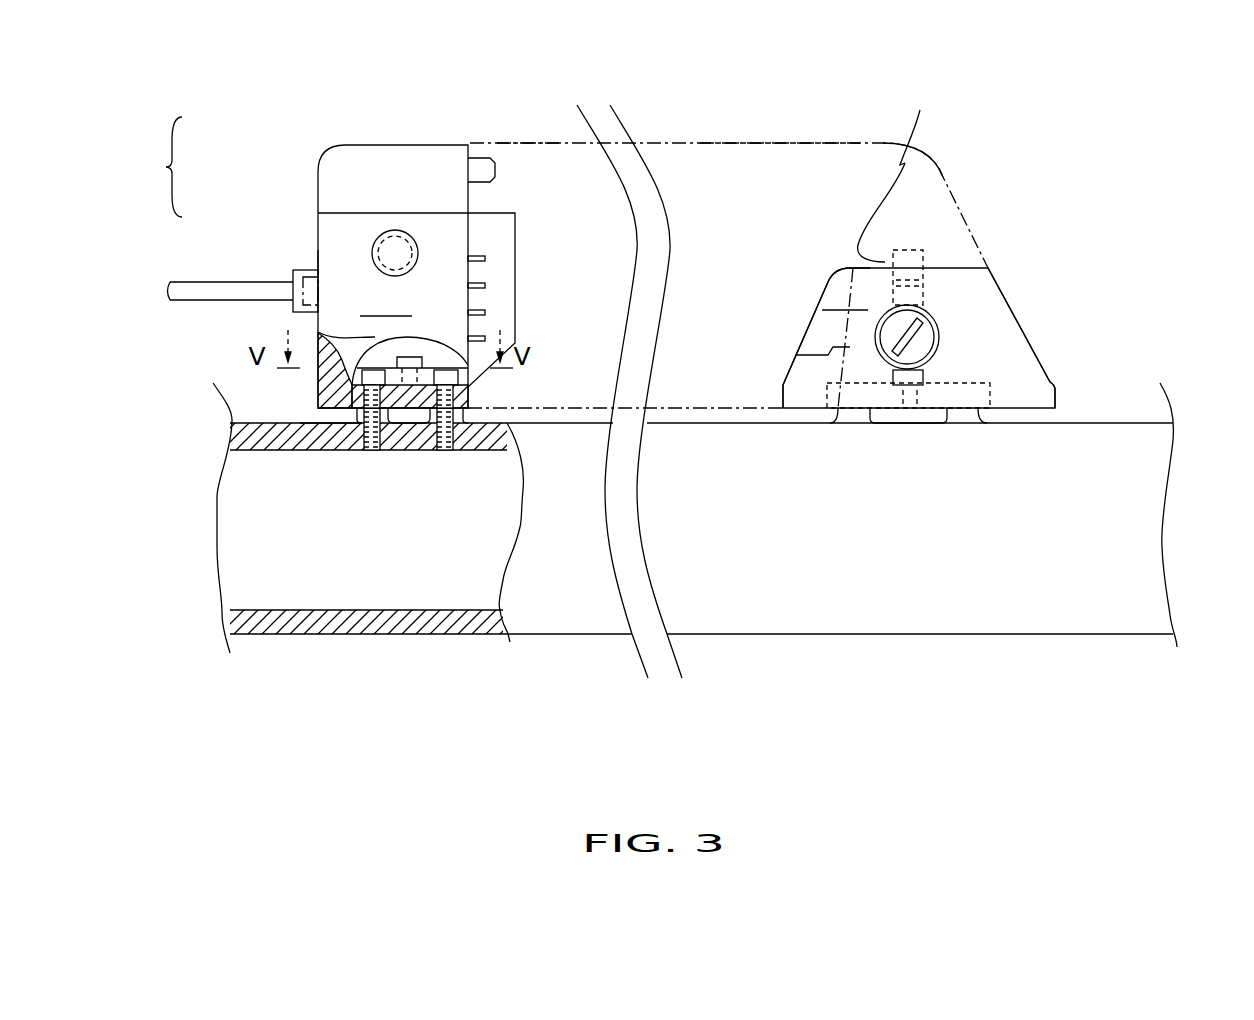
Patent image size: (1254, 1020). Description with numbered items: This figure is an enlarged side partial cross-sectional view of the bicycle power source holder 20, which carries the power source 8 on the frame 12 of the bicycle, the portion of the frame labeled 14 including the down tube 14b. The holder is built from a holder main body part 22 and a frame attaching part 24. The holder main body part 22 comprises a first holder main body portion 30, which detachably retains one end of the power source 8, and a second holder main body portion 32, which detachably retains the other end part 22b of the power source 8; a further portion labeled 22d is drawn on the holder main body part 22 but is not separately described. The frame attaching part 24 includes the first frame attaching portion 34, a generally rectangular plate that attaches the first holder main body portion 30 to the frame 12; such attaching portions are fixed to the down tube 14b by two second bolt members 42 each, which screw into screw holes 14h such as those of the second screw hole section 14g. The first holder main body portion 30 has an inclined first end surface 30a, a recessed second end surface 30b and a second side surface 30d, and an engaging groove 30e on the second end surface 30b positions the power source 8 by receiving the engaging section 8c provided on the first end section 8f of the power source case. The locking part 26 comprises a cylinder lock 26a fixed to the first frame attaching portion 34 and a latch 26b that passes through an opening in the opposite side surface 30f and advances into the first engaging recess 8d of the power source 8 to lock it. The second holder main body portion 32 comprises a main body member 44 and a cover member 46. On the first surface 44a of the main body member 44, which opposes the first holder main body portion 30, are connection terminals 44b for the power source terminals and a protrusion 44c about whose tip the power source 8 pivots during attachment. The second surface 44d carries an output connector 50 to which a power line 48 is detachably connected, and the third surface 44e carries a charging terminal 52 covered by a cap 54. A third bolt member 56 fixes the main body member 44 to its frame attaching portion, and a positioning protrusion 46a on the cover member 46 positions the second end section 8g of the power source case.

The power source 8 is at (942, 170).
The engaging section 8c is at (782, 383).
The first engaging recess 8d is at (905, 165).
The first end section 8f is at (935, 167).
The second end section 8g is at (495, 150).
The frame 12 is at (586, 648).
The mounting plate 14 is at (404, 648).
The down tube 14b is at (530, 587).
The second screw hole section 14g is at (342, 423).
The screw hole 14h is at (370, 451).
The power source holder 20 is at (835, 237).
The holder main body part 22 is at (1023, 270).
The other end part 22b is at (572, 153).
The housing recess 22d is at (900, 165).
The frame attaching part 24 is at (1000, 382).
The locking part 26 is at (935, 298).
The cylinder lock 26a is at (920, 353).
The latch 26b is at (910, 262).
The first holder main body portion 30 is at (1018, 297).
The first end surface 30a is at (1050, 376).
The second end surface 30b is at (807, 340).
The second side surface 30d is at (832, 319).
The engaging groove 30e is at (808, 383).
The opposite side surface 30f is at (855, 265).
The second holder main body portion 32 is at (1043, 207).
The first frame attaching portion 34 is at (968, 373).
The second bolt member 42 is at (470, 401).
The main body member 44 is at (305, 245).
The first surface 44a is at (517, 244).
The connection terminals 44b is at (485, 258).
The protrusion 44c is at (470, 233).
The second surface 44d is at (318, 258).
The third surface 44e is at (388, 302).
The cover member 46 is at (303, 183).
The positioning protrusion 46a is at (495, 168).
The power line 48 is at (232, 300).
The output connector 50 is at (305, 288).
The charging terminal 52 is at (395, 237).
The cap 54 is at (408, 233).
The third bolt member 56 is at (318, 393).